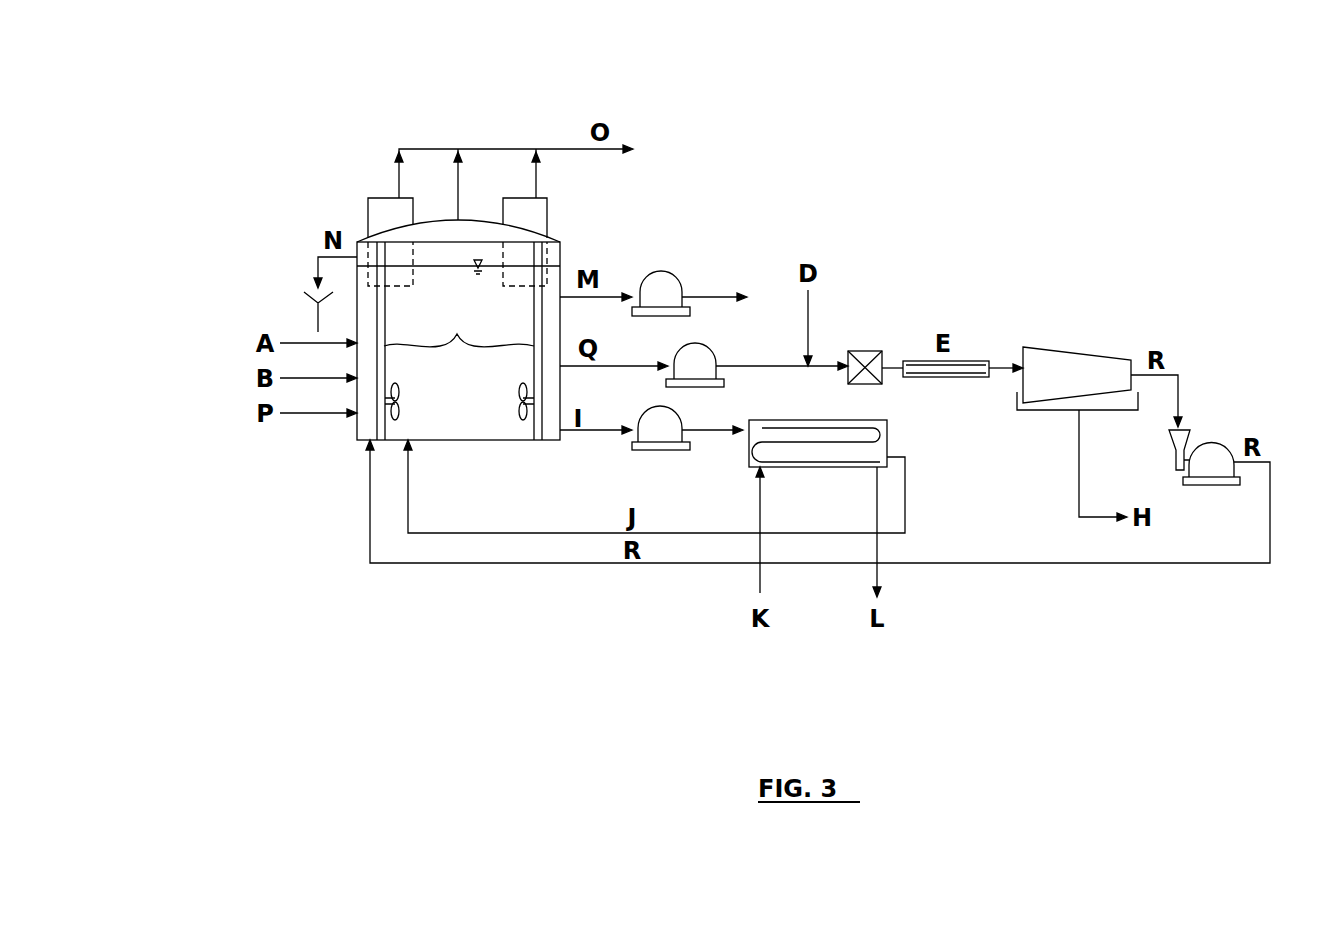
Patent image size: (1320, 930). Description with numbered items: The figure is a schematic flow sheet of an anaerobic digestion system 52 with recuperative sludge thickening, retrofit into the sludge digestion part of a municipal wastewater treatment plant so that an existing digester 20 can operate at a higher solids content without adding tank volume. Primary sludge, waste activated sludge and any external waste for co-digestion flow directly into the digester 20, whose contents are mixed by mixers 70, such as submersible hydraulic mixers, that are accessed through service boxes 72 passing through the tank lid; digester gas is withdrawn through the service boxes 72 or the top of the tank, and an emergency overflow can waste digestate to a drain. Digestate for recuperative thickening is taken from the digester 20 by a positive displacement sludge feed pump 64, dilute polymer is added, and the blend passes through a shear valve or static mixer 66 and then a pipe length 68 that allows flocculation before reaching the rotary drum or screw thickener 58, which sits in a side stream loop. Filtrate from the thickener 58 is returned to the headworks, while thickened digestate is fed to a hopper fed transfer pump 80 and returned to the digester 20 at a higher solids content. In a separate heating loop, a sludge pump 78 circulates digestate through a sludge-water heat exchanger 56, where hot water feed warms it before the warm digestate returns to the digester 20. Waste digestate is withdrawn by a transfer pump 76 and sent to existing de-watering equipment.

The digester 20 is at (520, 441).
The mixers 70 is at (459, 327).
The service boxes 72 is at (368, 206).
The transfer pump 76 is at (676, 272).
The sludge feed pump 64 is at (714, 351).
The shear valve or static mixer 66 is at (866, 350).
The pipe length 68 is at (973, 360).
The thickener 58 is at (1088, 348).
The transfer pump 80 is at (1221, 442).
The sludge pump 78 is at (663, 448).
The heat exchanger 56 is at (836, 468).
The anaerobic digestion system 52 is at (327, 652).